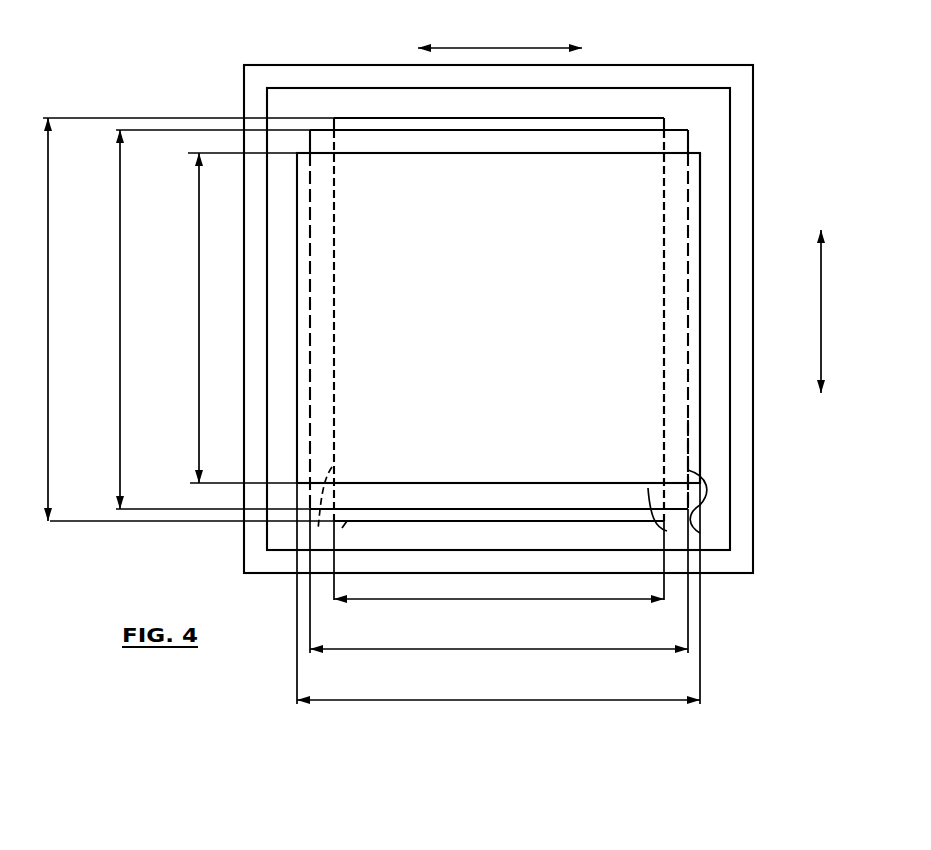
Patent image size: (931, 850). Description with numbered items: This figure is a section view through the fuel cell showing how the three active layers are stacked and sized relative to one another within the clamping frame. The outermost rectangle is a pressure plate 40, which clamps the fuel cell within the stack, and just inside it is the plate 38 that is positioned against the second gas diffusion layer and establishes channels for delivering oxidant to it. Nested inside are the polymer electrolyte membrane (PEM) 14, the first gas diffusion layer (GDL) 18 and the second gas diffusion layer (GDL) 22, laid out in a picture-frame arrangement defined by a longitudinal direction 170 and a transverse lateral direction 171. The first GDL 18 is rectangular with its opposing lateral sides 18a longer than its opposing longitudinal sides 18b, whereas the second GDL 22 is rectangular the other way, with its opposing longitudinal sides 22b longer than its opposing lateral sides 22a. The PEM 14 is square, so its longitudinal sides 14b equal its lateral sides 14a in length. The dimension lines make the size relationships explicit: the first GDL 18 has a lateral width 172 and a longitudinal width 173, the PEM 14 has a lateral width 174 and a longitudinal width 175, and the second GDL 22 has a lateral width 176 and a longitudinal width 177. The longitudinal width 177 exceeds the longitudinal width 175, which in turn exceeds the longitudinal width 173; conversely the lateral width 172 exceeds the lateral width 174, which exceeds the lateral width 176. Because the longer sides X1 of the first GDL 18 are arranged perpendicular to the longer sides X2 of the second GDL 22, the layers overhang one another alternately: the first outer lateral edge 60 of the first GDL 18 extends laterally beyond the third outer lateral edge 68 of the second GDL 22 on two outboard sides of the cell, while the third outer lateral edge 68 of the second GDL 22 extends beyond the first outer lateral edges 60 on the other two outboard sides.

The polymer electrolyte membrane 14 is at (690, 145).
The lateral sides of the PEM 14a is at (320, 121).
The longitudinal sides of the PEM 14b is at (702, 510).
The first gas diffusion layer 18 is at (700, 175).
The lateral sides of the first GDL 18a is at (392, 157).
The longitudinal sides of the first GDL 18b is at (700, 343).
The second gas diffusion layer 22 is at (658, 126).
The lateral sides of the second GDL 22a is at (602, 120).
The longitudinal sides of the second GDL 22b is at (670, 202).
The plate 38 is at (718, 385).
The pressure plate 40 is at (747, 470).
The lateral edge 60 is at (667, 531).
The third outer lateral edge 68 is at (336, 522).
The longitudinal direction 170 is at (821, 293).
The lateral direction 171 is at (535, 48).
The lateral width of the first GDL 172 is at (567, 700).
The longitudinal width of the first GDL 173 is at (199, 300).
The lateral width of the PEM 174 is at (413, 650).
The longitudinal width of the PEM 175 is at (120, 240).
The lateral width of the second GDL 176 is at (462, 600).
The longitudinal width of the second GDL 177 is at (55, 345).
The longer sides of the first GDL X1 is at (458, 153).
The longer sides of the second GDL X2 is at (706, 262).